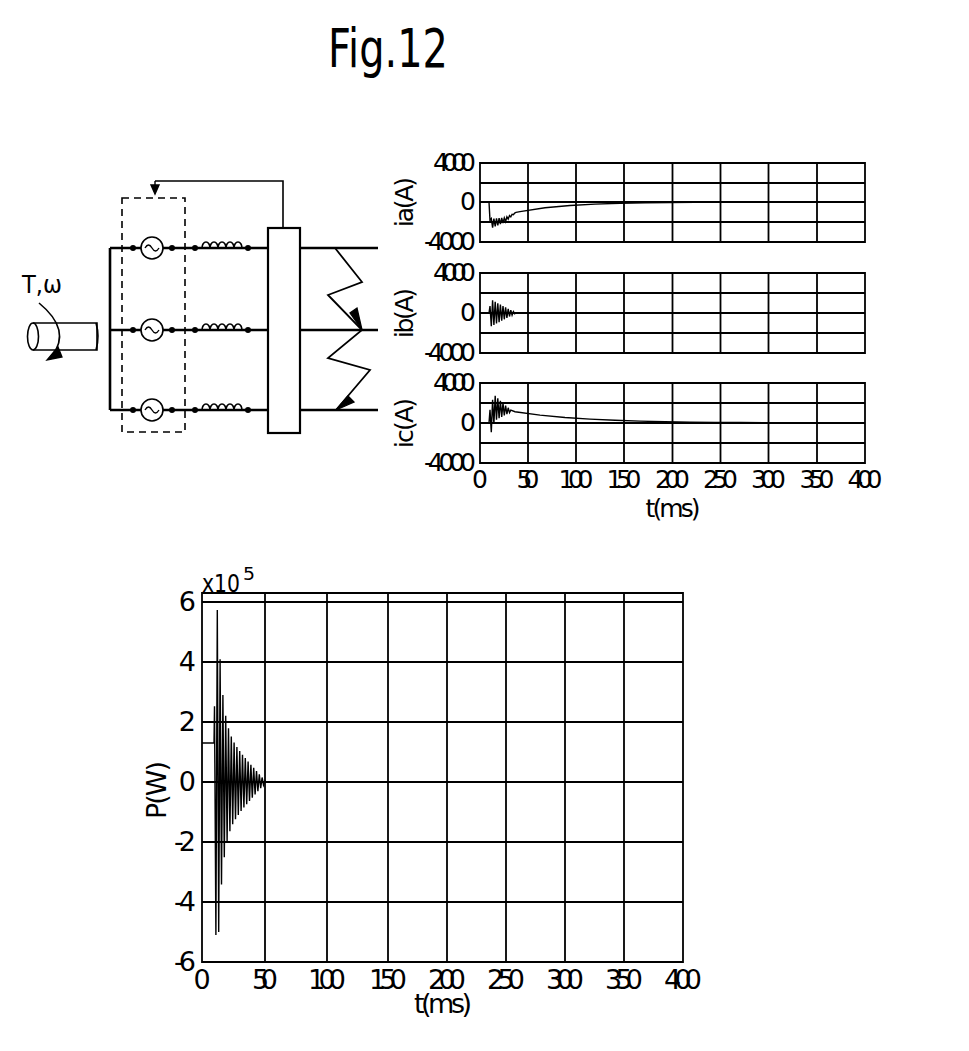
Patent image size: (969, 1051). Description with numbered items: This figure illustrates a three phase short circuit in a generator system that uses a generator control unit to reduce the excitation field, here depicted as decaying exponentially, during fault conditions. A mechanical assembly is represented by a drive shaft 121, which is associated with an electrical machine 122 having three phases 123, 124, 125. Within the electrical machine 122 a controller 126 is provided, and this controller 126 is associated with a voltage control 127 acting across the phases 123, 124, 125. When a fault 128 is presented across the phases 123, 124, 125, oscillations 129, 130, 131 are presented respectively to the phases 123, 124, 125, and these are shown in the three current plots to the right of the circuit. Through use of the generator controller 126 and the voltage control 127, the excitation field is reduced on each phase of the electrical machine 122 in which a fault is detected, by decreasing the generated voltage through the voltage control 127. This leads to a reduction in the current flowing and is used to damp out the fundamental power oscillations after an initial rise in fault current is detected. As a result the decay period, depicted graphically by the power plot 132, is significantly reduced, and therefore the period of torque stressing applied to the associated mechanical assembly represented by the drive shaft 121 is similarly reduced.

The drive shaft 121 is at (80, 340).
The electrical machine 122 is at (184, 200).
The first phase 123 is at (151, 237).
The second phase 124 is at (152, 319).
The third phase 125 is at (152, 399).
The controller 126 is at (183, 272).
The voltage control 127 is at (288, 357).
The fault 128 is at (354, 262).
The oscillation 129 is at (506, 212).
The oscillation 130 is at (503, 311).
The oscillation 131 is at (503, 409).
The decay period 132 is at (218, 743).